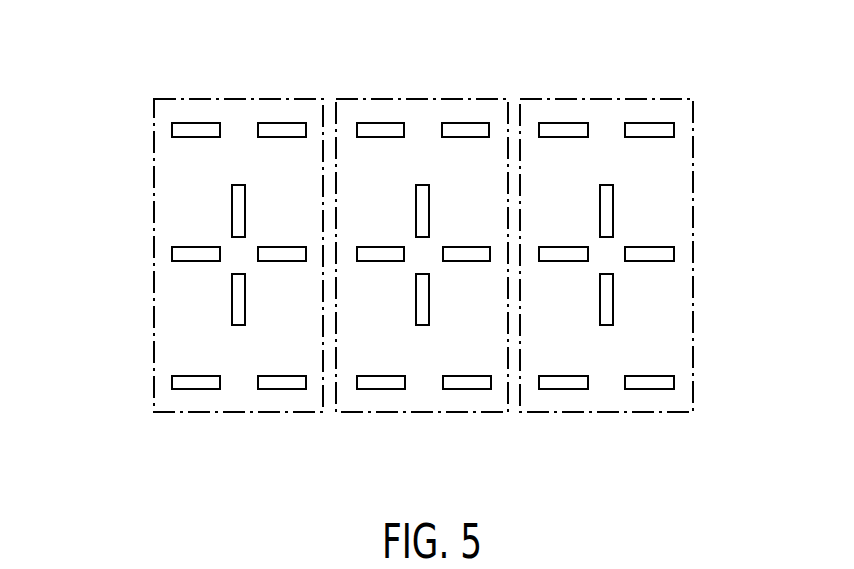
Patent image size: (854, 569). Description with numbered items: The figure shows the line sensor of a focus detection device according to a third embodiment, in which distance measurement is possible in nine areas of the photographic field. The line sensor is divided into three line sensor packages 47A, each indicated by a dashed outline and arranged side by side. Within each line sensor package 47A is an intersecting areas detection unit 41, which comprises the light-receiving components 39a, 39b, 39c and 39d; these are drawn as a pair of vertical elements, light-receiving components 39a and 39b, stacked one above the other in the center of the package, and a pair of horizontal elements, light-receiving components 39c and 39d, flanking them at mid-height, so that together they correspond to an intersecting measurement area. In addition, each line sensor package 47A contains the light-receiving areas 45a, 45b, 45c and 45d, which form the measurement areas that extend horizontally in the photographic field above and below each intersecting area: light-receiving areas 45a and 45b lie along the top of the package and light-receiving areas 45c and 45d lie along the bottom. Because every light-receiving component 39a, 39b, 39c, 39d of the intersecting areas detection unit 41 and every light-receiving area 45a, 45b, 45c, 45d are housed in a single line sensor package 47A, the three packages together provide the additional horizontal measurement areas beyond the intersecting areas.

The line sensor package 47A is at (199, 97).
The intersecting areas detection unit 41 is at (218, 279).
The light-receiving area 45a is at (375, 128).
The light-receiving area 45b is at (468, 128).
The light-receiving area 45c is at (381, 383).
The light-receiving area 45d is at (470, 383).
The light-receiving component 39a is at (608, 208).
The light-receiving component 39b is at (608, 313).
The light-receiving component 39c is at (580, 258).
The light-receiving component 39d is at (670, 257).